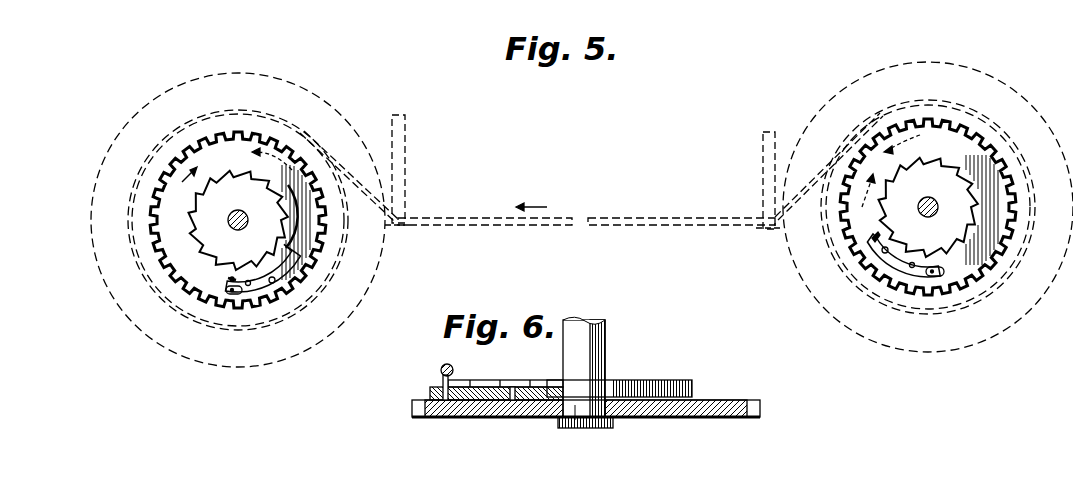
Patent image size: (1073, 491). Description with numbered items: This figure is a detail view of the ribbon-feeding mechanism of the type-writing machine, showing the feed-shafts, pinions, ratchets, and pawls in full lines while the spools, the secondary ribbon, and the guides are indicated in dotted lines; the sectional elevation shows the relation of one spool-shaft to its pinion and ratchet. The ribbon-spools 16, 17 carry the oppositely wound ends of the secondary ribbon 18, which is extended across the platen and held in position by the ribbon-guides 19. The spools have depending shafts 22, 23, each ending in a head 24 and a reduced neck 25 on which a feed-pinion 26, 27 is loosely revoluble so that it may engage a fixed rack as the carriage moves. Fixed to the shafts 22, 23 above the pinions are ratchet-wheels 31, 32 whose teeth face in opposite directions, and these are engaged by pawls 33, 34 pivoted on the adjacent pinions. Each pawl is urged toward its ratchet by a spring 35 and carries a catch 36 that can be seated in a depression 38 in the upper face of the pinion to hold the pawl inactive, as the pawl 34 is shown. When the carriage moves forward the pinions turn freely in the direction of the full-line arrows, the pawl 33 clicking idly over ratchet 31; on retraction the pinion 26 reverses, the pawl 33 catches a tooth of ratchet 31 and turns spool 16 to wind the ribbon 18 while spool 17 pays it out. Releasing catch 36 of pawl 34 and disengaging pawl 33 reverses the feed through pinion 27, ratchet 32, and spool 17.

In FIG. 5, the ribbon-spool 16 is at (146, 92).
In FIG. 5, the ribbon-spool 17 is at (946, 62).
In FIG. 5, the secondary ribbon 18 is at (628, 213).
In FIG. 5, the ribbon-guides 19 is at (405, 163).
In FIG. 5, the spool-shaft 22 is at (250, 211).
In FIG. 6, the spool-shaft 22 is at (607, 342).
In FIG. 5, the spool-shaft 23 is at (937, 202).
In FIG. 6, the head 24 is at (606, 420).
In FIG. 6, the reduced neck 25 is at (571, 409).
In FIG. 5, the feed-pinion 26 is at (237, 140).
In FIG. 6, the feed-pinion 26 is at (736, 400).
In FIG. 5, the feed-pinion 27 is at (928, 207).
In FIG. 5, the ratchet-wheel 31 is at (238, 220).
In FIG. 6, the ratchet-wheel 31 is at (649, 385).
In FIG. 5, the ratchet-wheel 32 is at (928, 207).
In FIG. 5, the pawl 33 is at (268, 298).
In FIG. 6, the pawl 33 is at (601, 386).
In FIG. 5, the pawl 34 is at (903, 281).
In FIG. 5, the spring 35 is at (303, 268).
In FIG. 5, the catch 36 is at (236, 300).
In FIG. 6, the catch 36 is at (441, 367).
In FIG. 5, the depression 38 is at (229, 279).
In FIG. 6, the depression 38 is at (446, 402).